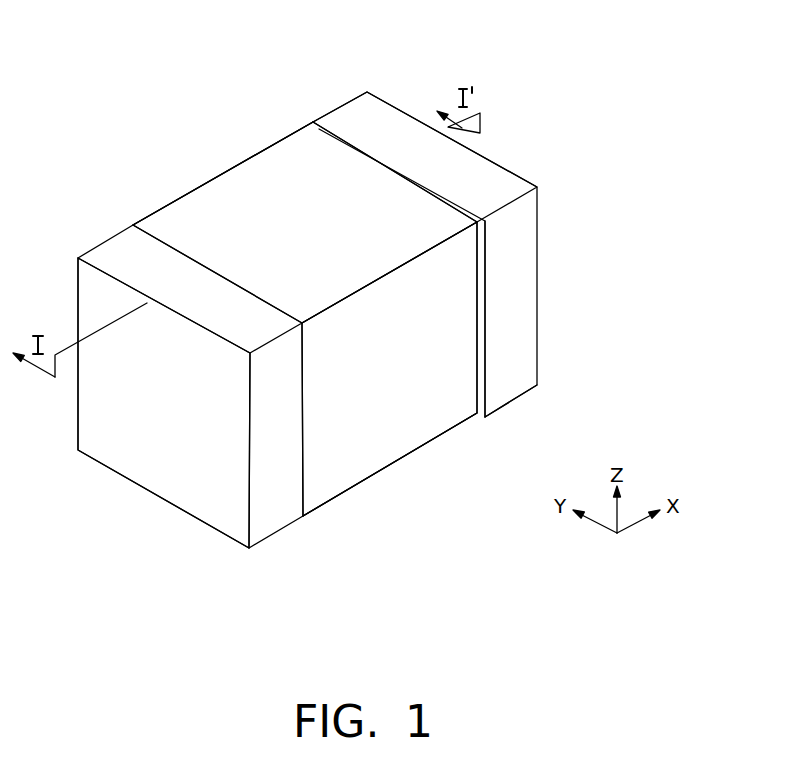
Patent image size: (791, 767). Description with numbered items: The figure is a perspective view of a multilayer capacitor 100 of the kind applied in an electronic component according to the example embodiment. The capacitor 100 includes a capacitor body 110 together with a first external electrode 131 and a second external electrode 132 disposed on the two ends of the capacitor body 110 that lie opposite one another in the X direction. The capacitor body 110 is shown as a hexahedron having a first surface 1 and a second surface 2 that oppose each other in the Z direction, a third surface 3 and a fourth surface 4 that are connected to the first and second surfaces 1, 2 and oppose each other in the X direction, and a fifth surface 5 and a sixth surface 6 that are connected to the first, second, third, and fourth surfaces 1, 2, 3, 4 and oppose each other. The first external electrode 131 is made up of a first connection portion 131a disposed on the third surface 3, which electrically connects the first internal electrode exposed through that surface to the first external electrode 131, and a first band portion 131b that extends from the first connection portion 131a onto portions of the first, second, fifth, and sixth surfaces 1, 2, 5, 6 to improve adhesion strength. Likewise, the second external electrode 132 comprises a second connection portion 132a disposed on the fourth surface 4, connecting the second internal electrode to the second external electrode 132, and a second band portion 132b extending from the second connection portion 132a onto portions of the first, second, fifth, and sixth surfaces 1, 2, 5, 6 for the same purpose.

The capacitor 100 is at (157, 27).
The capacitor body 110 is at (238, 192).
The first surface 1 is at (387, 462).
The second surface 2 is at (306, 188).
The third surface 3 is at (127, 399).
The fourth surface 4 is at (512, 167).
The fifth surface 5 is at (442, 365).
The sixth surface 6 is at (172, 209).
The first external electrode 131 is at (122, 553).
The first connection portion 131a is at (214, 504).
The first band portion 131b is at (266, 512).
The second external electrode 132 is at (633, 298).
The second connection portion 132a is at (539, 313).
The second band portion 132b is at (516, 358).